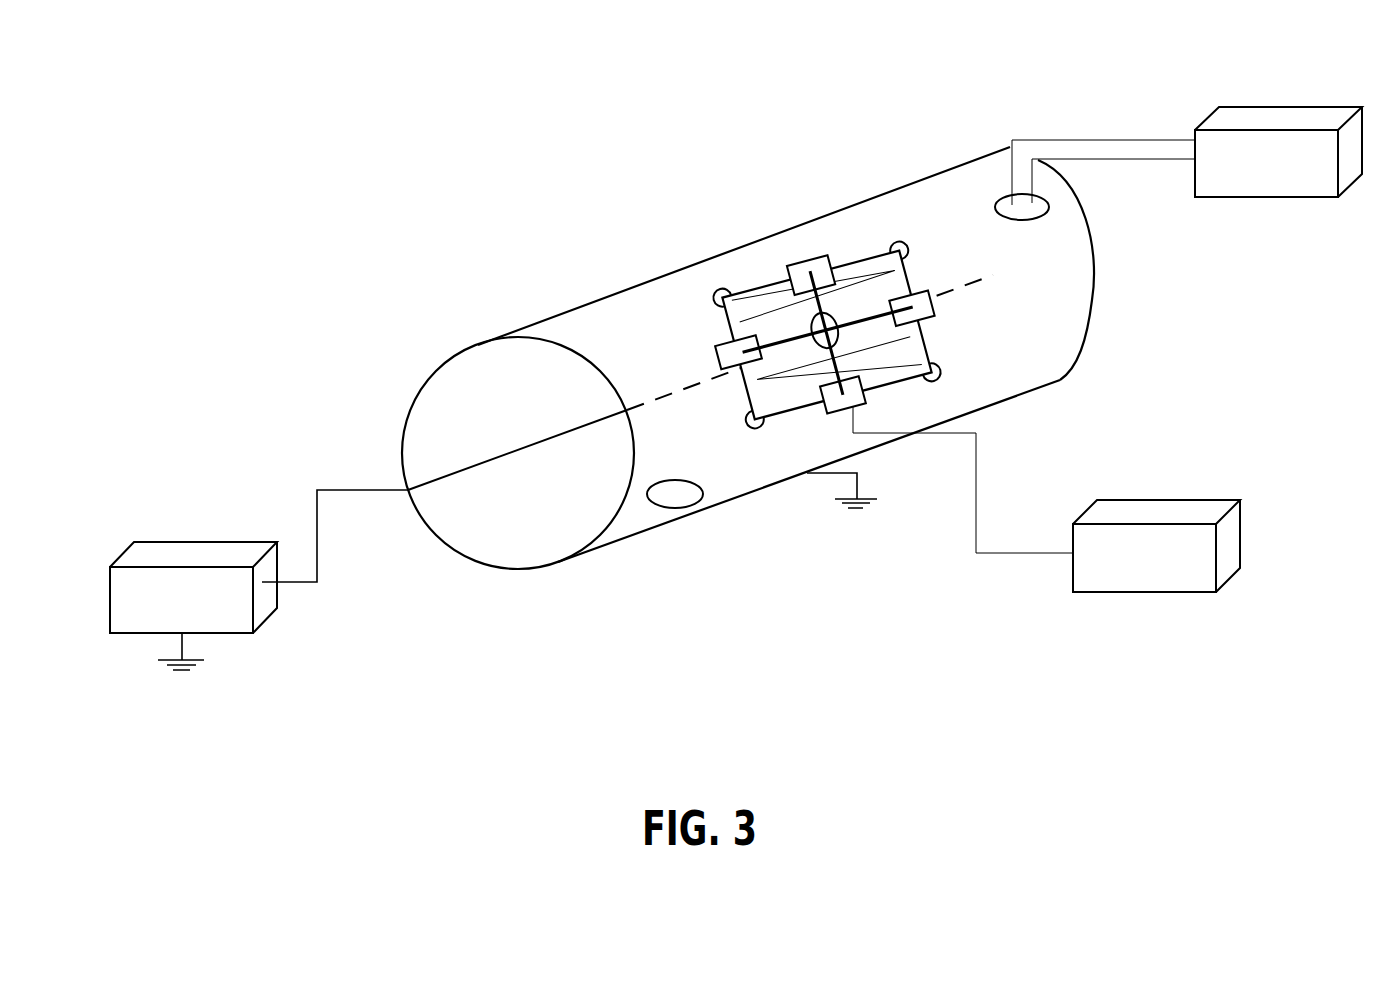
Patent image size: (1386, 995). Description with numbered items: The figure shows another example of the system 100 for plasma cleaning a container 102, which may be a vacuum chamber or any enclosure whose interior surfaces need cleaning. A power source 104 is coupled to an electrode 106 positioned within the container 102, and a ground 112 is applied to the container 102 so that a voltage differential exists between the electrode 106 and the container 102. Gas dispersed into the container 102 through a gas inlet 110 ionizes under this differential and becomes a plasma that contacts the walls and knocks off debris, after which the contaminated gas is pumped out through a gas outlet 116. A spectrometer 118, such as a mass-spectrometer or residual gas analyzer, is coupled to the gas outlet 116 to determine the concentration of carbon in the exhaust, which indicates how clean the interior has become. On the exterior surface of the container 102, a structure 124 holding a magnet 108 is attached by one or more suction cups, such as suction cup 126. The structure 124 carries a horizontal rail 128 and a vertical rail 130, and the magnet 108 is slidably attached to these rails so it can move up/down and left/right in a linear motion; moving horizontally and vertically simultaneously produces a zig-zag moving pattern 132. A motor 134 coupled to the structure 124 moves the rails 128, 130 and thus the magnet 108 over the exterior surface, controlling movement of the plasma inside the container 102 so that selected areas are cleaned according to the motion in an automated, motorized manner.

The system 100 is at (307, 168).
The container 102 is at (612, 287).
The power source 104 is at (178, 535).
The electrode 106 is at (957, 287).
The magnet 108 is at (845, 338).
The gas inlet 110 is at (673, 513).
The ground 112 is at (865, 478).
The gas outlet 116 is at (1030, 225).
The spectrometer 118 is at (1262, 103).
The structure 124 is at (763, 268).
The suction cup 126 is at (708, 296).
The horizontal rail 128 is at (735, 355).
The vertical rail 130 is at (843, 393).
The zig-zag moving pattern 132 is at (855, 272).
The motor 134 is at (1180, 492).